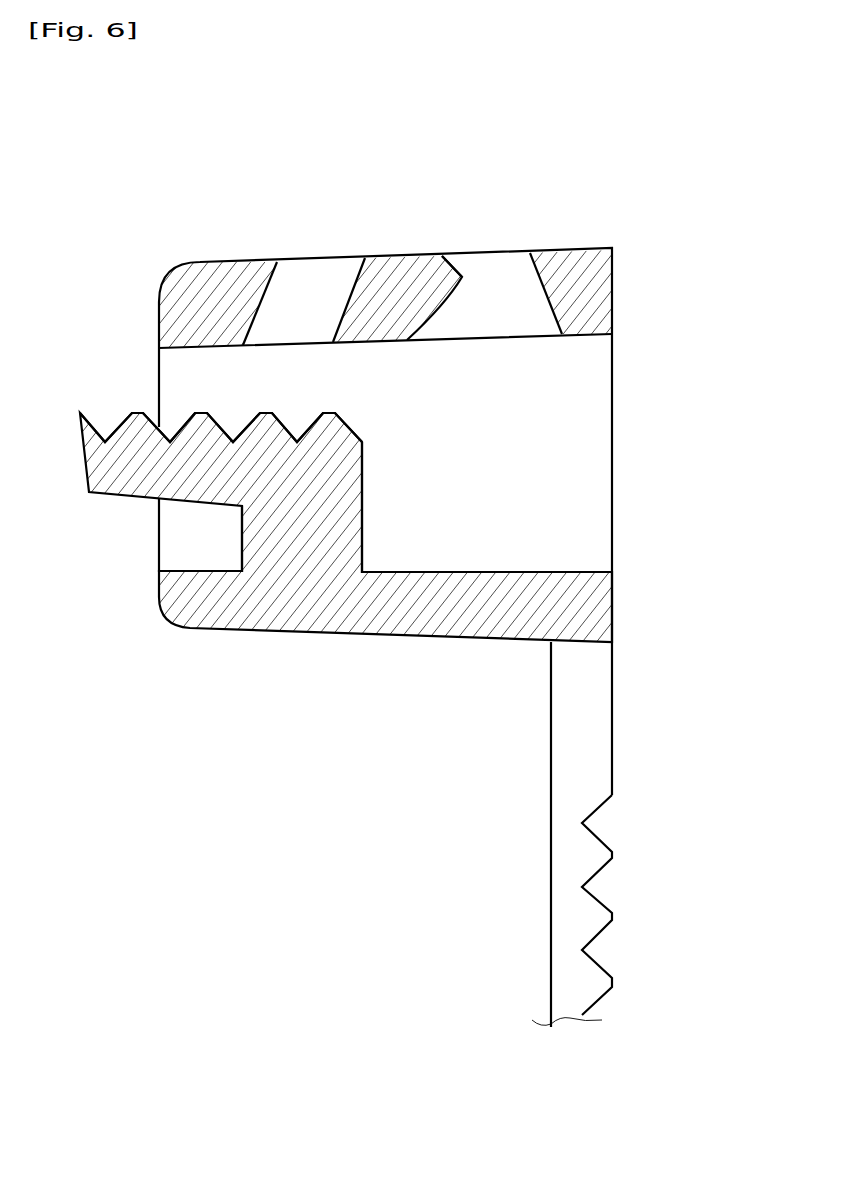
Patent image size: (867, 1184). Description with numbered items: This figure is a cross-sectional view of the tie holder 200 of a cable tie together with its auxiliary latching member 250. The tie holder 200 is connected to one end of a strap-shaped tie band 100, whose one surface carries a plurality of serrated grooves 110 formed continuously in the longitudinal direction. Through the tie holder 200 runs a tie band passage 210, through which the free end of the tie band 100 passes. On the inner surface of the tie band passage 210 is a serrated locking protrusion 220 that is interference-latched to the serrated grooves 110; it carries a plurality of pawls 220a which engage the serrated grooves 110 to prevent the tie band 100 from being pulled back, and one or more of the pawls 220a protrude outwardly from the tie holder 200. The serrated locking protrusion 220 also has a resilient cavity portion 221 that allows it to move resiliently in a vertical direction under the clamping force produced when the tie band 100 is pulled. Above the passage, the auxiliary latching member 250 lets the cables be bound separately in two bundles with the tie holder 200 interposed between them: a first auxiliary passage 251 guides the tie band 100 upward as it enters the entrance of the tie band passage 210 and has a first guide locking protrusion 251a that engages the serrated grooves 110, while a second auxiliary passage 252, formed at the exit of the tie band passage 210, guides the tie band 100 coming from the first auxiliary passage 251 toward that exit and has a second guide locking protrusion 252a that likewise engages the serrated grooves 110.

The tie band 100 is at (570, 797).
The serrated grooves 110 is at (593, 858).
The tie holder 200 is at (612, 206).
The tie band passage 210 is at (563, 505).
The serrated locking protrusion 220 is at (308, 467).
The pawls 220a is at (137, 412).
The resilient cavity portion 221 is at (197, 548).
The auxiliary latching member 250 is at (492, 148).
The first auxiliary passage 251 is at (516, 290).
The first guide locking protrusion 251a is at (452, 262).
The second auxiliary passage 252 is at (306, 290).
The second guide locking protrusion 252a is at (332, 330).